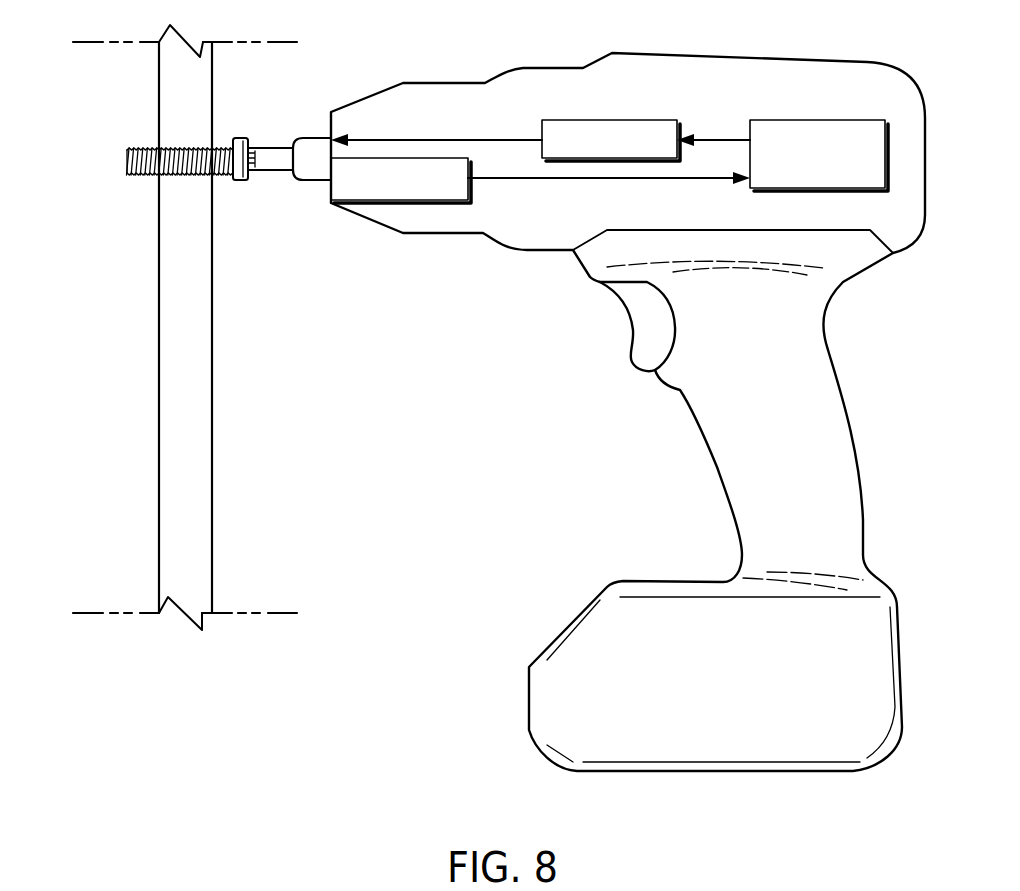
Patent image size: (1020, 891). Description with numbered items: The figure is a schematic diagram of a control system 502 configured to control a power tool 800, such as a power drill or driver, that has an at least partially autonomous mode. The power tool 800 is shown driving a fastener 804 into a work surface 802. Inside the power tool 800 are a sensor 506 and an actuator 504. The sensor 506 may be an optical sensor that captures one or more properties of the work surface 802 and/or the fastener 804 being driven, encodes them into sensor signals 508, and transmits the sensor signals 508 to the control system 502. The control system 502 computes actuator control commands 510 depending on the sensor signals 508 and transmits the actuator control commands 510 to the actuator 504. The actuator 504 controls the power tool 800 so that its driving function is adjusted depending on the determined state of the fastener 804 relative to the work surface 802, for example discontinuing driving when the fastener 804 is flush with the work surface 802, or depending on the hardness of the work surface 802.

The power tool 800 is at (702, 447).
The work surface 802 is at (213, 380).
The fastener 804 is at (247, 181).
The control system 502 is at (817, 119).
The actuator 504 is at (621, 119).
The sensor 506 is at (395, 201).
The sensor signals 508 is at (557, 181).
The actuator control commands 510 is at (723, 139).